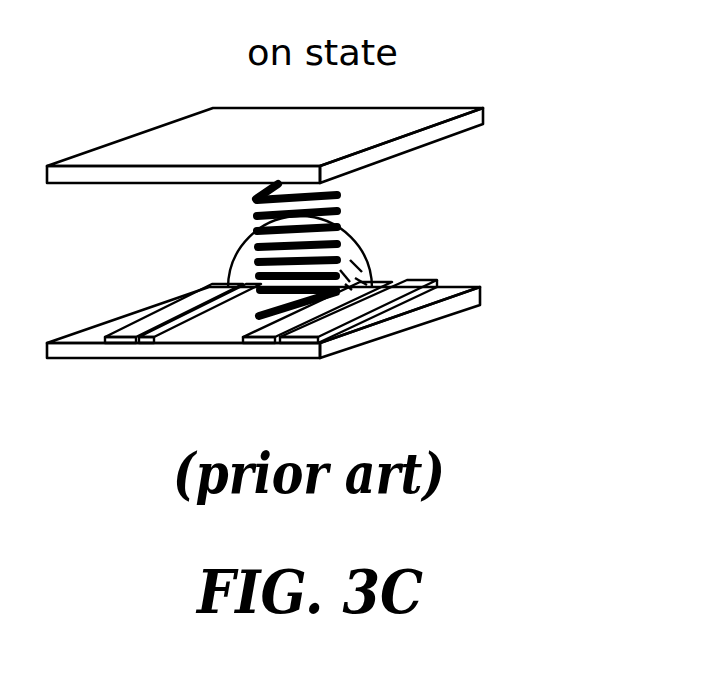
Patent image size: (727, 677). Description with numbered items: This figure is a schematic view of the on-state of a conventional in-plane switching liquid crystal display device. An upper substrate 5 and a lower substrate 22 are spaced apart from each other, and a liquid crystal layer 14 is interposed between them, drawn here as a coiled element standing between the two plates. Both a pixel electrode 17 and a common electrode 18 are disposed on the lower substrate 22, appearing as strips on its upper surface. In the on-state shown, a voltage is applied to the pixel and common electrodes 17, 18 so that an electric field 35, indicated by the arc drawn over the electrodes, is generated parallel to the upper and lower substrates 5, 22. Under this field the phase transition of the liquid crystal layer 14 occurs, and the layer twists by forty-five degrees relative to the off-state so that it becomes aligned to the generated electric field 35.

The upper substrate 5 is at (483, 118).
The liquid crystal layer 14 is at (337, 202).
The electric field 35 is at (372, 254).
The lower substrate 22 is at (482, 296).
The pixel electrode 17 is at (182, 313).
The common electrode 18 is at (425, 285).